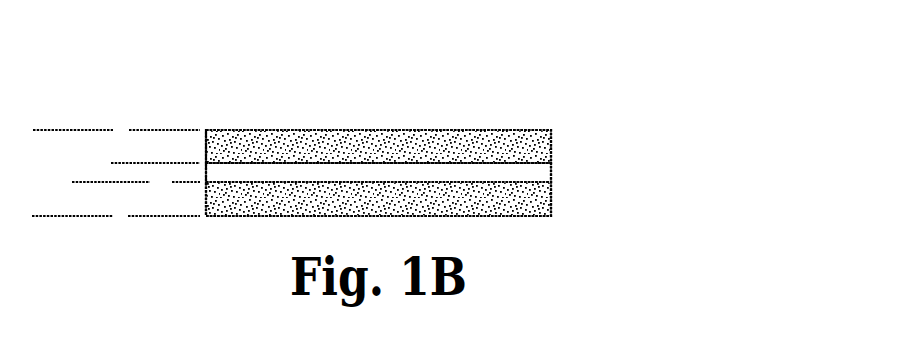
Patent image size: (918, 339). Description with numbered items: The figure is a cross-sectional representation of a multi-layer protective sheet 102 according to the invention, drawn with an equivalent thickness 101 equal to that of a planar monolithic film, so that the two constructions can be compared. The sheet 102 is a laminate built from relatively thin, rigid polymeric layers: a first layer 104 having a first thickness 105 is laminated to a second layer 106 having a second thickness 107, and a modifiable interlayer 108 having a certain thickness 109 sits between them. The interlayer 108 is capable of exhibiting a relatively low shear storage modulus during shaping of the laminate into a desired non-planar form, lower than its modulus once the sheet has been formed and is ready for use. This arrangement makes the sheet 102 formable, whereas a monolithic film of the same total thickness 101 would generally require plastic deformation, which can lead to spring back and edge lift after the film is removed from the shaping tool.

The equivalent thickness 101 is at (43, 132).
The multi-layer protective sheet 102 is at (186, 82).
The first layer 104 is at (552, 143).
The first thickness 105 is at (160, 95).
The second layer 106 is at (552, 195).
The second thickness 107 is at (83, 145).
The modifiable interlayer 108 is at (543, 170).
The thickness of the interlayer 109 is at (120, 131).